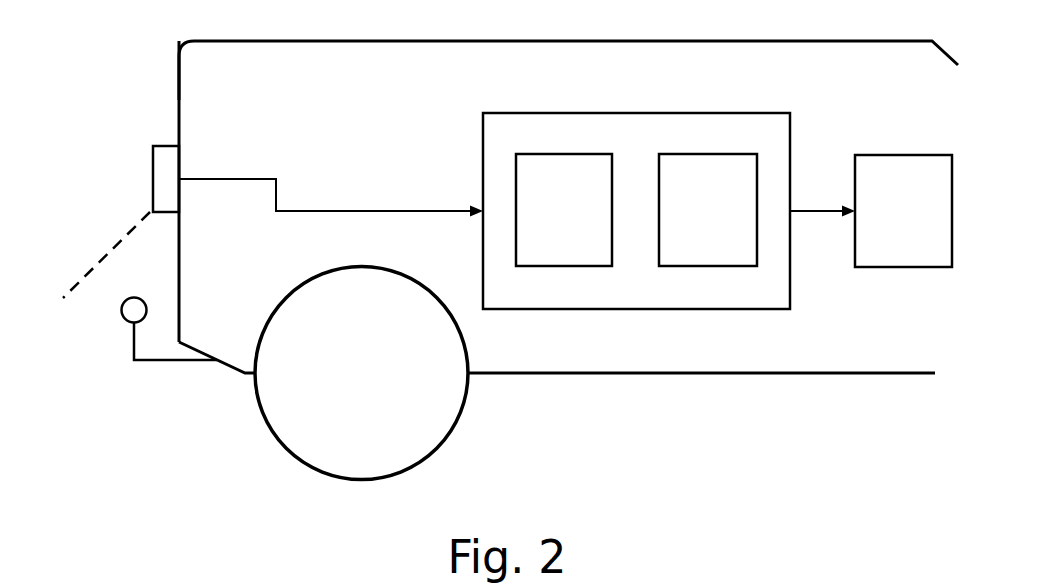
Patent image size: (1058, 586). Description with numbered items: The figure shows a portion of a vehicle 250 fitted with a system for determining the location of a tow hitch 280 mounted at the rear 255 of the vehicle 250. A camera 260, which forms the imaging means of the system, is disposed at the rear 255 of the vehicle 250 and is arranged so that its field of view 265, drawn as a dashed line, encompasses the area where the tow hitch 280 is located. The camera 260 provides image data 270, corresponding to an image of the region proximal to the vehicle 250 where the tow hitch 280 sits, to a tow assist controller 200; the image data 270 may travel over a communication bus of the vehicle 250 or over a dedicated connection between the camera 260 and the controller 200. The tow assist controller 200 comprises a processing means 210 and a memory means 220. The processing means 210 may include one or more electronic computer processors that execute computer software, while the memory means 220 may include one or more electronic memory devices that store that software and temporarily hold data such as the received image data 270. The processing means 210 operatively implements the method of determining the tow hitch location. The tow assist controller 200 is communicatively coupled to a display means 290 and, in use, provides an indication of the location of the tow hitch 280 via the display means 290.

The tow assist controller 200 is at (636, 211).
The processing means 210 is at (564, 210).
The memory means 220 is at (708, 210).
The vehicle 250 is at (568, 260).
The rear of the vehicle 255 is at (148, 99).
The camera 260 is at (167, 177).
The field of view 265 is at (91, 269).
The image data 270 is at (331, 198).
The tow hitch 280 is at (122, 322).
The display means 290 is at (871, 211).